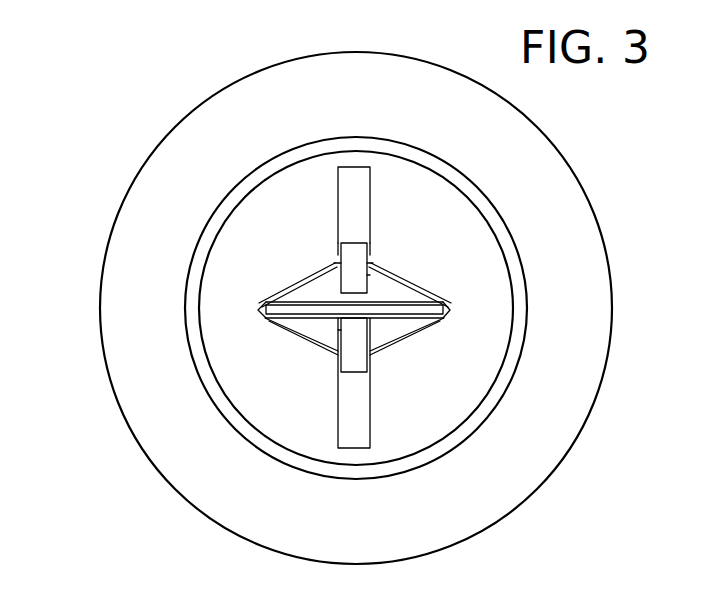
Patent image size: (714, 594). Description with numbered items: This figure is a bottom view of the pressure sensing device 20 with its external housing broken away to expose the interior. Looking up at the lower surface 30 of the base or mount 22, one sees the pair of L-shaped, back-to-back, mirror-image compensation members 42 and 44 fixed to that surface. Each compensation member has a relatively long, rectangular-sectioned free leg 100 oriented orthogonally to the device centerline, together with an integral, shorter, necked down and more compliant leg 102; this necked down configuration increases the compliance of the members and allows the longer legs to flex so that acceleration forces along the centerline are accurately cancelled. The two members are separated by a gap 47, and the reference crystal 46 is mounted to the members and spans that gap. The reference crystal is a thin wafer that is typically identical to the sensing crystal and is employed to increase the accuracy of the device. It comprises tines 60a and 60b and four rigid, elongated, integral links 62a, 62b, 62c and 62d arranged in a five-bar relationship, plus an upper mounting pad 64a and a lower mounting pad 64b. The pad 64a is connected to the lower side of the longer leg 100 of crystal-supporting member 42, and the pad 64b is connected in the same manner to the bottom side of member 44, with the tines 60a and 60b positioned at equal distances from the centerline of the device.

The pressure sensing device 20 is at (112, 147).
The base or mount 22 is at (597, 170).
The lower surface 30 is at (211, 179).
The compensation member 42 is at (375, 220).
The compensation member 44 is at (374, 400).
The reference crystal 46 is at (326, 263).
The gap 47 is at (405, 300).
The tine 60a is at (298, 291).
The tine 60b is at (413, 323).
The link 62a is at (260, 307).
The link 62b is at (320, 343).
The link 62c is at (392, 340).
The link 62d is at (405, 292).
The upper mounting pad 64a is at (340, 261).
The lower mounting pad 64b is at (366, 368).
The free leg 100 is at (372, 212).
The necked down leg 102 is at (371, 274).